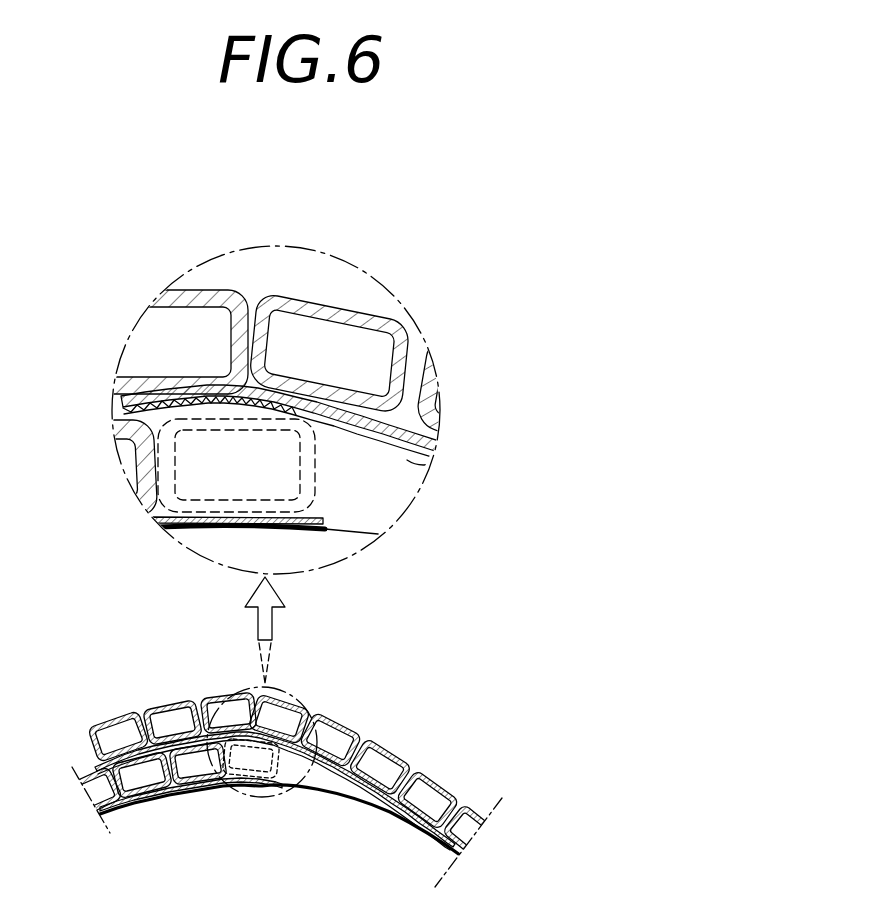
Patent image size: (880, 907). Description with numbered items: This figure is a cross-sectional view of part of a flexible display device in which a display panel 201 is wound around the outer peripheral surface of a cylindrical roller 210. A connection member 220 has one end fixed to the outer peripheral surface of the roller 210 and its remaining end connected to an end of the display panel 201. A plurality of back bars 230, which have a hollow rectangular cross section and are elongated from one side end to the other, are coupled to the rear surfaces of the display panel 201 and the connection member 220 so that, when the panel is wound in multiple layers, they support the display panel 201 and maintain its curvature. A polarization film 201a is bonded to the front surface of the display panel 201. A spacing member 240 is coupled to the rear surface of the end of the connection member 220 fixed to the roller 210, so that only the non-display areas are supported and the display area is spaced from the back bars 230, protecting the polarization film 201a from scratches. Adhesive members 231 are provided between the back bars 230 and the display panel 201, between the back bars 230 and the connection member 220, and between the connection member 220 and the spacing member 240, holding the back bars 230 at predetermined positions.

The display panel 201 is at (433, 456).
The polarization film 201a is at (398, 464).
The roller 210 is at (342, 538).
The connection member 220 is at (158, 530).
The back bars 230 is at (347, 315).
The adhesive members 231 is at (438, 450).
The spacing member 240 is at (307, 467).